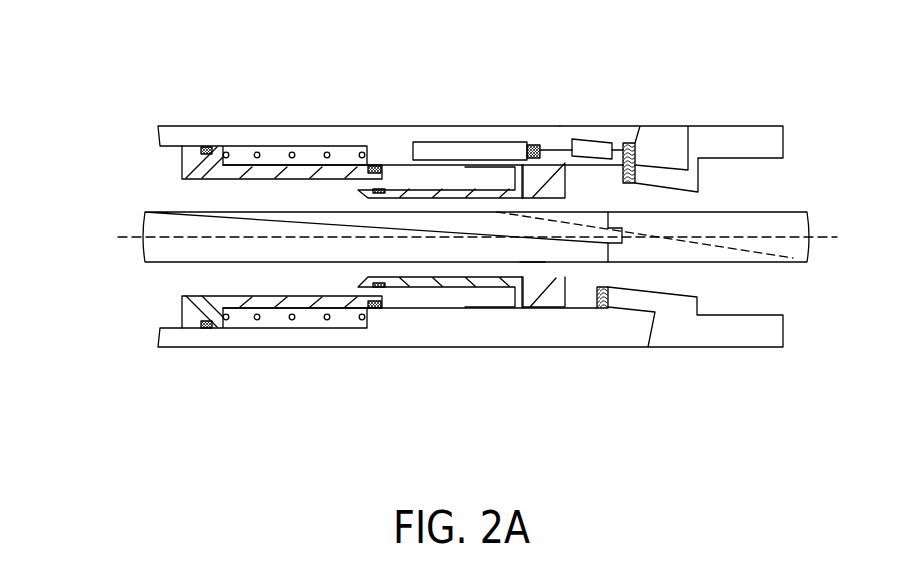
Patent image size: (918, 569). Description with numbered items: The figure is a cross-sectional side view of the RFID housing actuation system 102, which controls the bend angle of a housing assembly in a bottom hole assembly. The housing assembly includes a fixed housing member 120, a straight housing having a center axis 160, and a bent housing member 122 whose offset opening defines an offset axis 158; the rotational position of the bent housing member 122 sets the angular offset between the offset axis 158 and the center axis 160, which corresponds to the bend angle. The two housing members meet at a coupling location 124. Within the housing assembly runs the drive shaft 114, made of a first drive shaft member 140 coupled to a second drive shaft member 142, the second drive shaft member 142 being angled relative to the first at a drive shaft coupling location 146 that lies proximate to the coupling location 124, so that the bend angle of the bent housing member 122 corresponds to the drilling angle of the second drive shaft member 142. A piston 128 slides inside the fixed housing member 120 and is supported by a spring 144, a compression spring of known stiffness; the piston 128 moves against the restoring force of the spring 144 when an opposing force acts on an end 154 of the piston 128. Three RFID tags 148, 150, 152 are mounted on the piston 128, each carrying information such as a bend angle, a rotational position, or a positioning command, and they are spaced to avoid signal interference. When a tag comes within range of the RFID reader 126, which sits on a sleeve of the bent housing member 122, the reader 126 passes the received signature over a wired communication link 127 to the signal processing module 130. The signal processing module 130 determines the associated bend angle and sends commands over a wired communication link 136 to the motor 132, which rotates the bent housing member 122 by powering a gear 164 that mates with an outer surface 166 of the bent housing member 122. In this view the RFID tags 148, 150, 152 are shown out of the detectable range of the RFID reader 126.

The RFID housing actuation system 102 is at (120, 351).
The drive shaft 114 is at (157, 250).
The fixed housing member 120 is at (288, 138).
The bent housing member 122 is at (709, 137).
The coupling location 124 is at (587, 315).
The RFID reader 126 is at (402, 294).
The wired communication link 127 is at (522, 198).
The piston 128 is at (197, 320).
The signal processing module 130 is at (481, 130).
The motor 132 is at (604, 131).
The wired communication link 136 is at (535, 148).
The first drive shaft member 140 is at (532, 252).
The second drive shaft member 142 is at (787, 222).
The spring 144 is at (258, 153).
The drive shaft coupling location 146 is at (614, 248).
The RFID tag 148 is at (243, 300).
The RFID tag 150 is at (280, 300).
The RFID tag 152 is at (327, 300).
The end of the piston 154 is at (181, 297).
The offset axis 158 is at (548, 212).
The center axis 160 is at (134, 236).
The gear 164 is at (629, 143).
The outer surface 166 is at (601, 307).